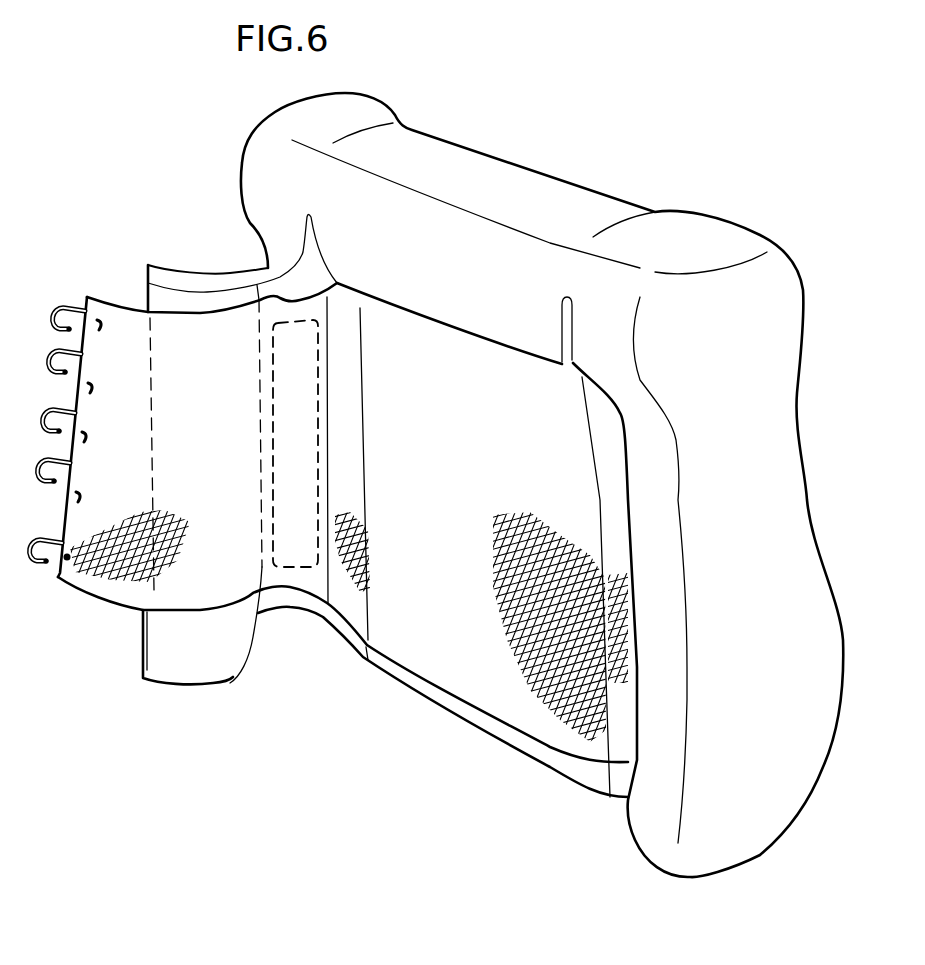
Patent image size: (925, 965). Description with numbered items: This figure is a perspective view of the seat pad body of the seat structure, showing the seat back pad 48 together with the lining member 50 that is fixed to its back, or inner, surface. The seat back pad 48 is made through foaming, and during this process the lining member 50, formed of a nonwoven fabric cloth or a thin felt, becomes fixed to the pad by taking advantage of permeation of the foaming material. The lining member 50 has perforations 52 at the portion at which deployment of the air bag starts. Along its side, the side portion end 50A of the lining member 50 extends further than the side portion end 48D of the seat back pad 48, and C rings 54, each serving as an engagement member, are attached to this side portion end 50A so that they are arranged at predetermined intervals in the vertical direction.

The seat back pad 48 is at (510, 168).
The side portion end of the seat pad 48D is at (143, 265).
The lining member 50 is at (208, 337).
The side portion end of the lining member 50A is at (86, 297).
The perforations 52 is at (317, 410).
The C rings 54 is at (66, 336).